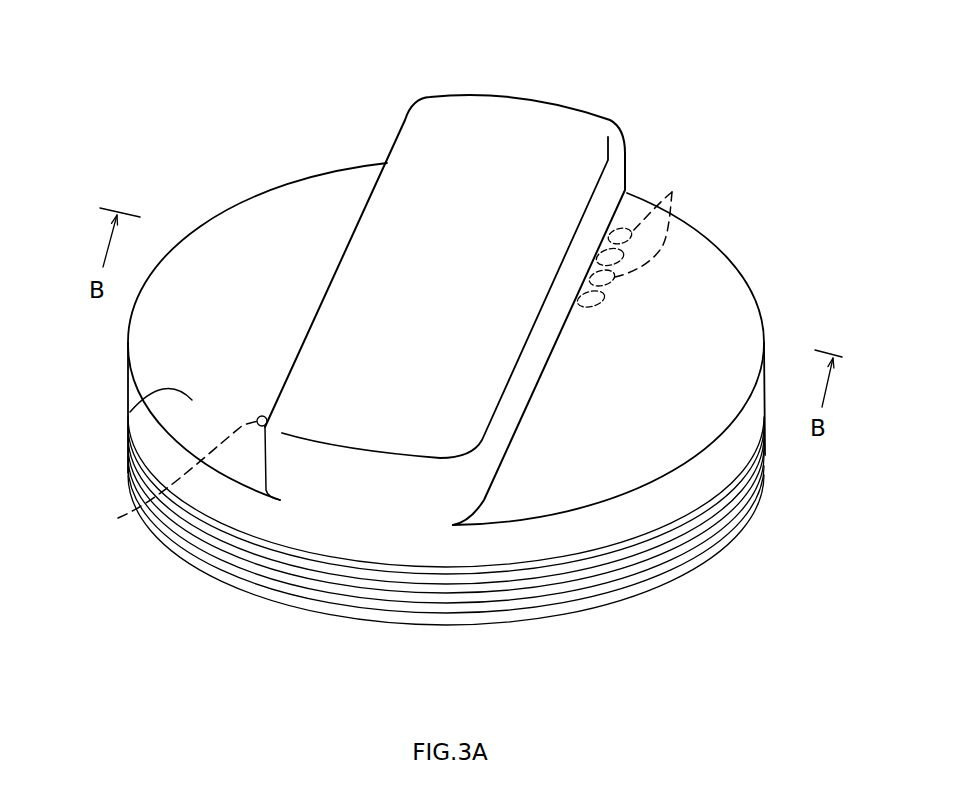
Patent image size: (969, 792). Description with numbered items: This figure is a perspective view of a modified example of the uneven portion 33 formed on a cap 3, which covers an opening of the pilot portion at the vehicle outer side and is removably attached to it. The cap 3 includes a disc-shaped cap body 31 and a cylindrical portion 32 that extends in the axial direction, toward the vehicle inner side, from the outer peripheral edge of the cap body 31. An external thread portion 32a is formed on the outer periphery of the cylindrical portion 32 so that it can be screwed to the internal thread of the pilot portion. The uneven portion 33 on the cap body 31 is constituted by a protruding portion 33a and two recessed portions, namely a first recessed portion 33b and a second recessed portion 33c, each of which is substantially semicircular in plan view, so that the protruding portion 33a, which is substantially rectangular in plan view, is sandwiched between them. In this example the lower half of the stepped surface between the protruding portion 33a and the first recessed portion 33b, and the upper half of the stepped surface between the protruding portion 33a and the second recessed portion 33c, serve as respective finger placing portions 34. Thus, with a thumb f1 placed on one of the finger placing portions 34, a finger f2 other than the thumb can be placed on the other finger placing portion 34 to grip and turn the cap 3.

The cap 3 is at (227, 178).
The cap body 31 is at (317, 176).
The cylindrical portion 32 is at (643, 560).
The external thread portion 32a is at (543, 597).
The uneven portion 33 is at (405, 112).
The protruding portion 33a is at (523, 137).
The first recessed portion 33b is at (128, 415).
The second recessed portion 33c is at (710, 280).
The finger placing portion 34 is at (608, 183).
The thumb f1 is at (178, 477).
The finger f2 is at (672, 192).